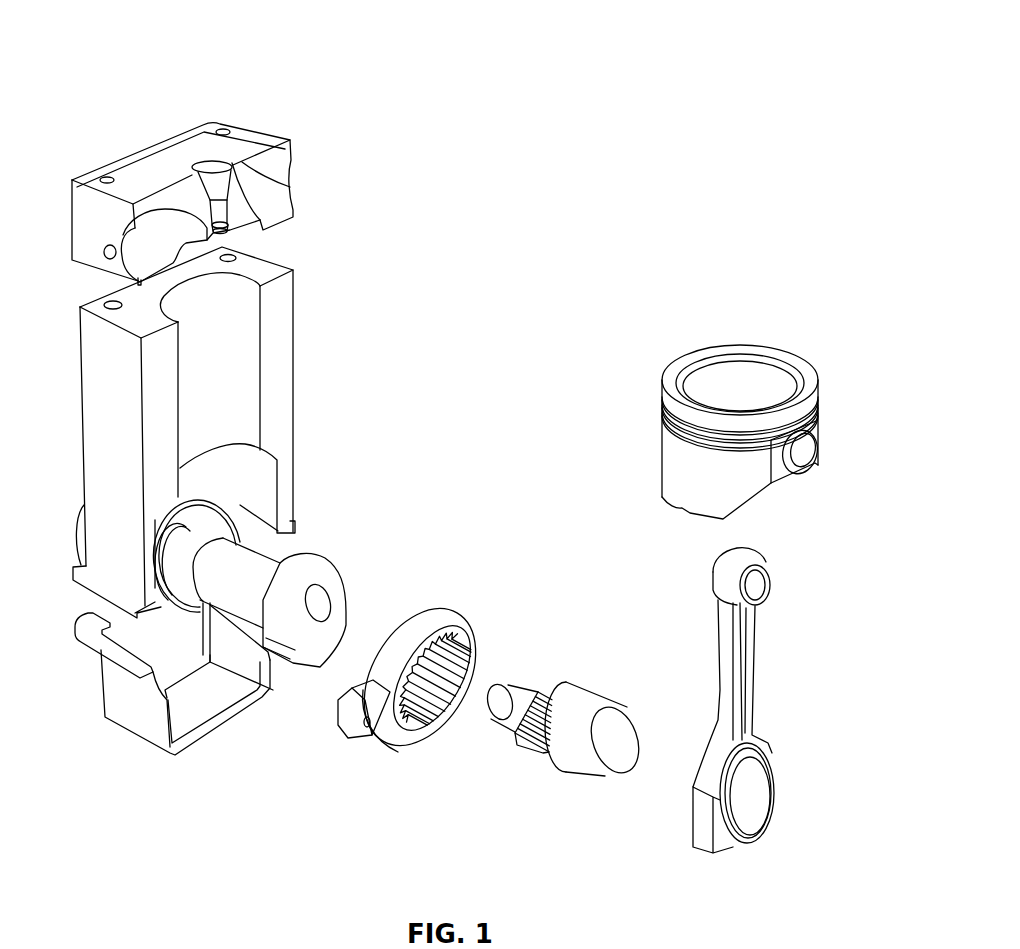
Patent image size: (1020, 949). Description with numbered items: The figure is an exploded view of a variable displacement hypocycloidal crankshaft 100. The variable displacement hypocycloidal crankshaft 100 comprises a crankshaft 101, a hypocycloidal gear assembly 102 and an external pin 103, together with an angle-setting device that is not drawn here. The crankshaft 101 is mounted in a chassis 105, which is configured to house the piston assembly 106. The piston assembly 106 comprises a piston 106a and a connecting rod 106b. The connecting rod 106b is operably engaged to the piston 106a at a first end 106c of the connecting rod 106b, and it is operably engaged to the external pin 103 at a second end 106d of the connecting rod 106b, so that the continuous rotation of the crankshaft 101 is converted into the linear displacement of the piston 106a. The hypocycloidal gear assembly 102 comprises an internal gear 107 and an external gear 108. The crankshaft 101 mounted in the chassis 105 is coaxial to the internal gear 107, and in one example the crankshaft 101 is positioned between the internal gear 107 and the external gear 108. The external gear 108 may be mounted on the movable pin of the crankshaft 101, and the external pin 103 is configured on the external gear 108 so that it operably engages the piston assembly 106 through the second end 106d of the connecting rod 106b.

The variable displacement hypocycloidal crankshaft 100 is at (399, 66).
The crankshaft 101 is at (308, 567).
The hypocycloidal gear assembly 102 is at (498, 652).
The external pin 103 is at (580, 753).
The chassis 105 is at (192, 487).
The piston assembly 106 is at (784, 599).
The piston 106a is at (717, 495).
The connecting rod 106b is at (742, 685).
The first end of the connecting rod 106c is at (752, 575).
The second end of the connecting rod 106d is at (755, 797).
The internal gear 107 is at (437, 615).
The external gear 108 is at (571, 691).